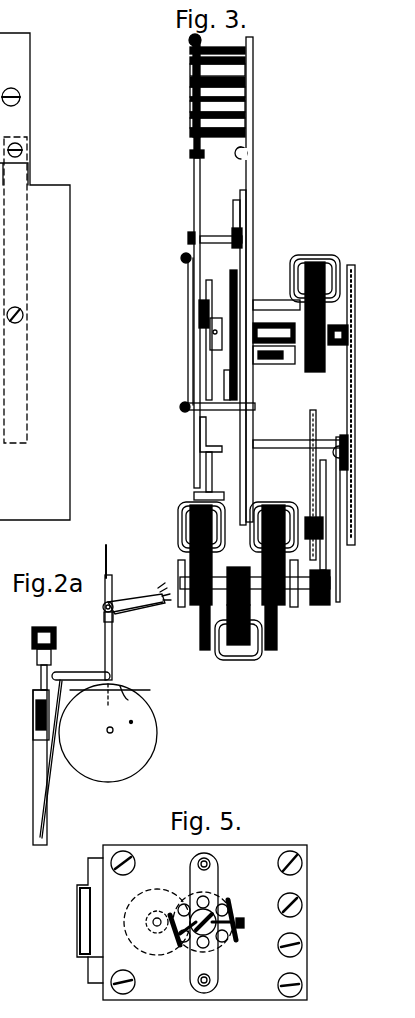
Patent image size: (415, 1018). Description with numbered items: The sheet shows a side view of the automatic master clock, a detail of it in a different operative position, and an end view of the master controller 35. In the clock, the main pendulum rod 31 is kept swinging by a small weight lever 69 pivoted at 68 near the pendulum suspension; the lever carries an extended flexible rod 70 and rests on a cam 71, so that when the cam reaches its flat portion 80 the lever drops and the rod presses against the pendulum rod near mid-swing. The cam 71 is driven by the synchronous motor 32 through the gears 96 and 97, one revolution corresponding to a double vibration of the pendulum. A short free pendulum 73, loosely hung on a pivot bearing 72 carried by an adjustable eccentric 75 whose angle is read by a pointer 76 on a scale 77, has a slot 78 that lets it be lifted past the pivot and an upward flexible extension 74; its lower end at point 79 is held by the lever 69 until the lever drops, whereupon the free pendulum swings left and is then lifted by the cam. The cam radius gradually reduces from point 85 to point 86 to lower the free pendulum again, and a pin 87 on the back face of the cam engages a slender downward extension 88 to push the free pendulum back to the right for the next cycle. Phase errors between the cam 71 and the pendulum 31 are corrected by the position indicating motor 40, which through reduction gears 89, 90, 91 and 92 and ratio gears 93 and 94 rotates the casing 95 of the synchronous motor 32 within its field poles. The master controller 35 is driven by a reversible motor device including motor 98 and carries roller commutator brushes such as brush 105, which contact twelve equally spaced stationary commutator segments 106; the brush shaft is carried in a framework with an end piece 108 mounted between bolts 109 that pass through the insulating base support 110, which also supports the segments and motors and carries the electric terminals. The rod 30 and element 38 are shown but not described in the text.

In FIG. 3, the rod 30 is at (184, 206).
In FIG. 3, the pendulum rod 31 is at (205, 470).
In FIG. 2A, the pendulum rod 31 is at (32, 759).
In FIG. 3, the synchronous motor 32 is at (318, 257).
In FIG. 5, the master controller 35 is at (148, 846).
In FIG. 5, the gear wheel 38 is at (222, 898).
In FIG. 3, the position indicating motor 40 is at (0, 548).
In FIG. 3, the pivot 68 is at (204, 302).
In FIG. 2A, the weight lever 69 is at (75, 674).
In FIG. 3, the flexible rod 70 is at (199, 434).
In FIG. 2A, the flexible rod 70 is at (48, 806).
In FIG. 3, the cam 71 is at (188, 381).
In FIG. 2A, the cam 71 is at (108, 782).
In FIG. 3, the pivot bearing 72 is at (188, 238).
In FIG. 2A, the pivot bearing 72 is at (103, 607).
In FIG. 3, the short pendulum 73 is at (184, 256).
In FIG. 2A, the short pendulum 73 is at (104, 620).
In FIG. 3, the flexible extension 74 is at (192, 172).
In FIG. 2A, the flexible extension 74 is at (104, 550).
In FIG. 2A, the adjustable eccentric 75 is at (125, 600).
In FIG. 3, the pointer 76 is at (240, 220).
In FIG. 2A, the pointer 76 is at (150, 606).
In FIG. 2A, the scale 77 is at (166, 578).
In FIG. 2A, the slot 78 is at (104, 638).
In FIG. 2A, the lower end point of pendulum 79 is at (112, 674).
In FIG. 2A, the flat portion of cam 80 is at (131, 700).
In FIG. 2A, the cam point 85 is at (106, 708).
In FIG. 2A, the cam point 86 is at (143, 688).
In FIG. 3, the pin 87 is at (210, 338).
In FIG. 2A, the pin 87 is at (132, 724).
In FIG. 3, the downward extension 88 is at (199, 323).
In FIG. 2A, the downward extension 88 is at (108, 708).
In FIG. 3, the reduction gear 89 is at (322, 608).
In FIG. 3, the reduction gear 90 is at (0, 528).
In FIG. 3, the reduction gear 91 is at (305, 540).
In FIG. 3, the reduction gear 92 is at (310, 488).
In FIG. 3, the ratio gear 93 is at (350, 447).
In FIG. 3, the ratio gear 94 is at (356, 368).
In FIG. 3, the motor casing 95 is at (335, 348).
In FIG. 3, the gear 96 is at (238, 360).
In FIG. 3, the gear 97 is at (232, 390).
In FIG. 5, the motor 98 is at (80, 915).
In FIG. 5, the commutator brush 105 is at (236, 945).
In FIG. 5, the commutator segments 106 is at (185, 890).
In FIG. 5, the end piece 108 is at (216, 972).
In FIG. 5, the bolts 109 is at (212, 860).
In FIG. 5, the insulating base support 110 is at (95, 977).